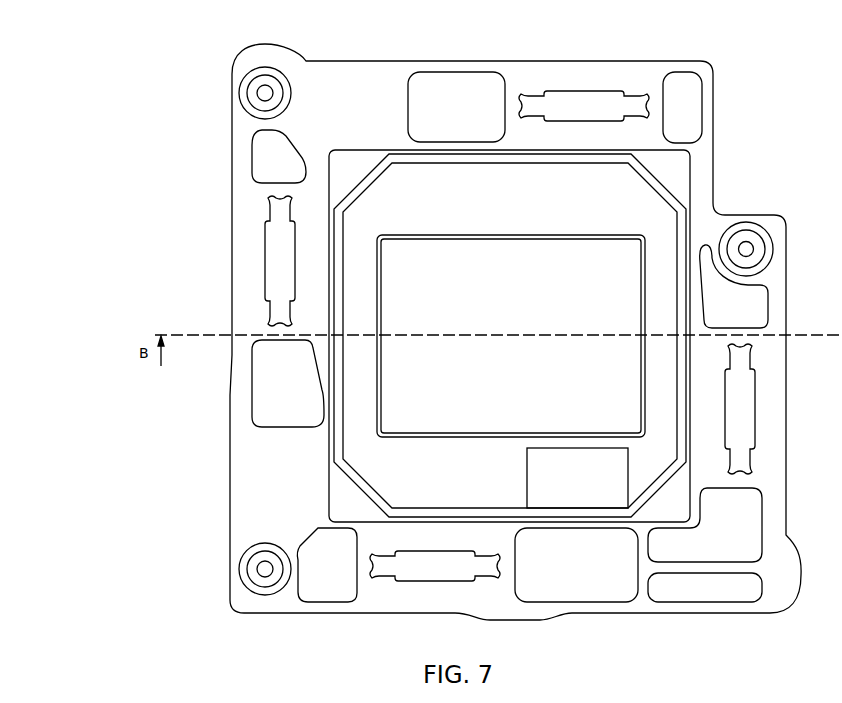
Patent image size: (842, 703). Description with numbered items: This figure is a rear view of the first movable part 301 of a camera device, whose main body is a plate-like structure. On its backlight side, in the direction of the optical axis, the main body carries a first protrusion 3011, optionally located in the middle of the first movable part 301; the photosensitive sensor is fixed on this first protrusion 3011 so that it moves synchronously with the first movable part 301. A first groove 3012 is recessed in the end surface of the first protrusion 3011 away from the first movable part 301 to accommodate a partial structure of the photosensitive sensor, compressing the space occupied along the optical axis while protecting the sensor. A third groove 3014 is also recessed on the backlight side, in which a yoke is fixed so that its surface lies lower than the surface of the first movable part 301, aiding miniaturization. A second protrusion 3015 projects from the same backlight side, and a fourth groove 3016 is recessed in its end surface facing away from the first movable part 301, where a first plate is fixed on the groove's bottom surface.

The first movable part 301 is at (232, 173).
The first protrusion 3011 is at (332, 433).
The first groove 3012 is at (390, 470).
The third groove 3014 is at (278, 278).
The second protrusion 3015 is at (242, 74).
The fourth groove 3016 is at (250, 97).